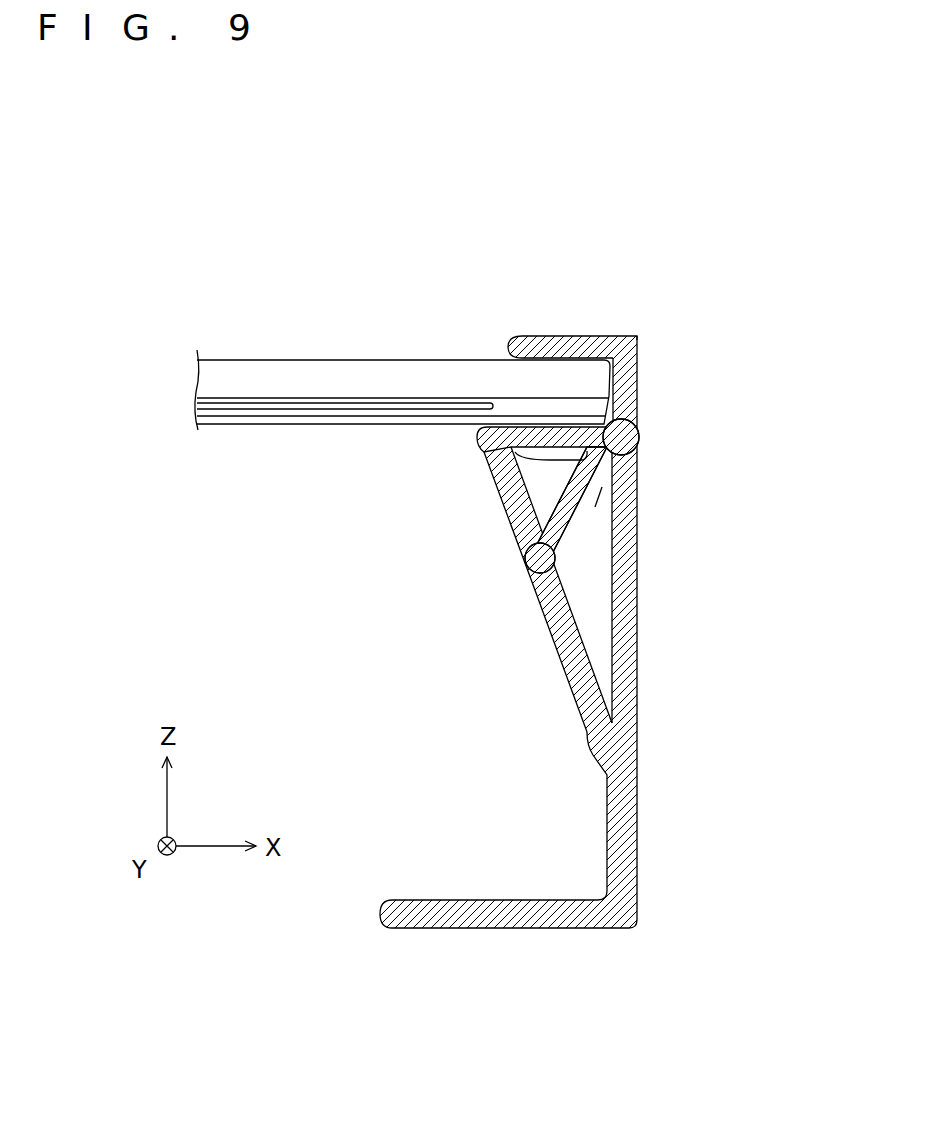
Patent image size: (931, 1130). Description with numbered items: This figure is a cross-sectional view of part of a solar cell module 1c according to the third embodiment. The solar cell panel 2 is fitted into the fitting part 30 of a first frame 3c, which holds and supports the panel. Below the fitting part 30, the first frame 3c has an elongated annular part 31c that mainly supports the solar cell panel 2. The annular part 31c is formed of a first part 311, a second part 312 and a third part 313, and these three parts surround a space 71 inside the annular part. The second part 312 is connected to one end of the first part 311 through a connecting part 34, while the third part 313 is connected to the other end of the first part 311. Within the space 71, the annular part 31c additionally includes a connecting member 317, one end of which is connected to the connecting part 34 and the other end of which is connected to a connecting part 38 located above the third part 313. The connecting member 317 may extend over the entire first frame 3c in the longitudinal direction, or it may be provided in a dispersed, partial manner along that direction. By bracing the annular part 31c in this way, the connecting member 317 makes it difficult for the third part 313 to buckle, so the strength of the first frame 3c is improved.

The solar cell module 1c is at (185, 327).
The solar cell panel 2 is at (355, 352).
The first frame 3c is at (638, 352).
The fitting part 30 is at (638, 392).
The connecting part 34 is at (640, 429).
The first part 311 is at (553, 462).
The connecting member 317 is at (583, 530).
The second part 312 is at (638, 487).
The annular part 31c is at (785, 465).
The third part 313 is at (552, 712).
The connecting part 38 is at (578, 760).
The space 71 is at (513, 462).